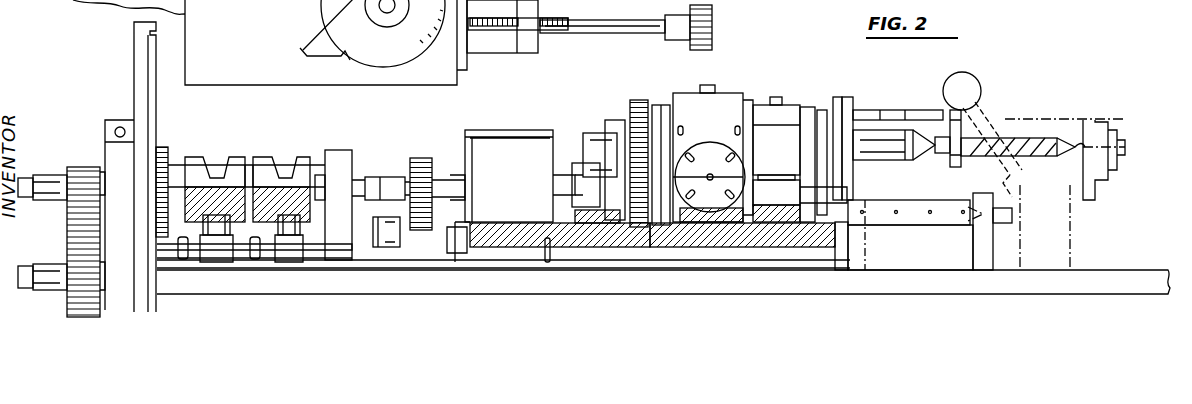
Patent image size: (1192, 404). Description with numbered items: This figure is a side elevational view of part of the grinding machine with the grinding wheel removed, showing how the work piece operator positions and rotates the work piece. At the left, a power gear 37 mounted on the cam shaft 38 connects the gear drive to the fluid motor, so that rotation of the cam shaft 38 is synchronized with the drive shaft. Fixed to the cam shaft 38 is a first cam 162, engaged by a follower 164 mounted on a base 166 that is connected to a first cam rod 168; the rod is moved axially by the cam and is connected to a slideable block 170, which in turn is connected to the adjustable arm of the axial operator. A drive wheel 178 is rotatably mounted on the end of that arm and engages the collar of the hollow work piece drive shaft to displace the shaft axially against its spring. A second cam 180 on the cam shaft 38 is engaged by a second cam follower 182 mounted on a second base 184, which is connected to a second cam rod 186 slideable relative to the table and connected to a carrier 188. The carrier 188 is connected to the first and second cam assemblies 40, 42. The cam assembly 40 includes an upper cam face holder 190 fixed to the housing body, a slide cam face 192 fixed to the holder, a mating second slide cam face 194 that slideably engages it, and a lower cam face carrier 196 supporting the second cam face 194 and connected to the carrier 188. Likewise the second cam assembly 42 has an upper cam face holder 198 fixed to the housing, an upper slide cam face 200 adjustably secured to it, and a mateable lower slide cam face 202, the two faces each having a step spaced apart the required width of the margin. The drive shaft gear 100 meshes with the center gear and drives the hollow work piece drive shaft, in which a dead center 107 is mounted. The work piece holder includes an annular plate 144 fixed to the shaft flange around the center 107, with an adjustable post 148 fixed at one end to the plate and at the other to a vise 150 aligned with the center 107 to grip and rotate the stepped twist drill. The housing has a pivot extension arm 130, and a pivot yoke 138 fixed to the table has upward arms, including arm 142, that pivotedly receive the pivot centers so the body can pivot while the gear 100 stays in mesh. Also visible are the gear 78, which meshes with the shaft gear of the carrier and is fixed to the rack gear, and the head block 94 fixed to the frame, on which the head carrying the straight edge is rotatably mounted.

The power gear 37 is at (161, 148).
The cam shaft 38 is at (330, 150).
The first cam assembly 40 is at (727, 183).
The second cam assembly 42 is at (794, 100).
The gear 78 is at (425, 158).
The head block 94 is at (390, 86).
The drive shaft gear 100 is at (643, 102).
The dead center 107 is at (888, 160).
The pivot extension arm 130 is at (912, 218).
The pivot yoke 138 is at (938, 262).
The arm 142 is at (985, 247).
The annular plate 144 is at (850, 105).
The adjustable post 148 is at (872, 110).
The vise 150 is at (958, 147).
The first cam 162 is at (199, 156).
The follower 164 is at (217, 228).
The base 166 is at (233, 235).
The first cam rod 168 is at (455, 262).
The slideable block 170 is at (528, 240).
The drive wheel 178 is at (562, 168).
The second cam 180 is at (267, 156).
The second cam follower 182 is at (306, 226).
The second base 184 is at (296, 238).
The second cam rod 186 is at (727, 262).
The carrier 188 is at (805, 228).
The upper cam face holder 190 is at (693, 93).
The slide cam face 192 is at (703, 152).
The second slide cam face 194 is at (710, 180).
The lower cam face carrier 196 is at (688, 196).
The upper cam face holder 198 is at (789, 125).
The upper slide cam face 200 is at (771, 173).
The lower slide cam face 202 is at (797, 186).